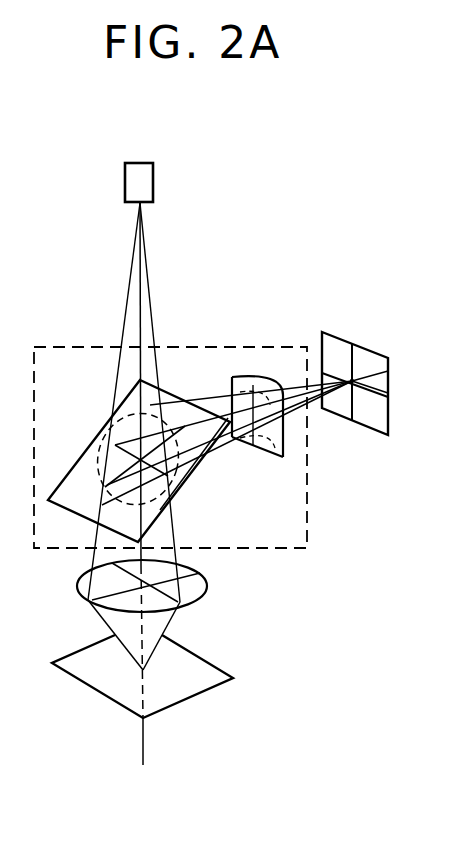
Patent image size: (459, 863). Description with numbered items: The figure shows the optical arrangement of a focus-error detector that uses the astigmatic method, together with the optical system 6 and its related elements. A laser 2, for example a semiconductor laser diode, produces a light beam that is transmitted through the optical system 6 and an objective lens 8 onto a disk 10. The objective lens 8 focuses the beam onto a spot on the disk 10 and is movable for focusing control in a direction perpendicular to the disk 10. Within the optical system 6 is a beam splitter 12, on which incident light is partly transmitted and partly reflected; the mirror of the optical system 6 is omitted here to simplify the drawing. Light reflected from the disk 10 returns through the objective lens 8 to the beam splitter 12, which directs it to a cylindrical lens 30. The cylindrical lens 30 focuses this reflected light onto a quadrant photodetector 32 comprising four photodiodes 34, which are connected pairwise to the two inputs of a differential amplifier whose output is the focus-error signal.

The laser 2 is at (154, 173).
The optical system 6 is at (307, 462).
The objective lens 8 is at (201, 590).
The disk 10 is at (197, 694).
The beam splitter 12 is at (72, 463).
The cylindrical lens 30 is at (247, 372).
The quadrant photodetector 32 is at (374, 350).
The photodiodes 34 is at (320, 340).